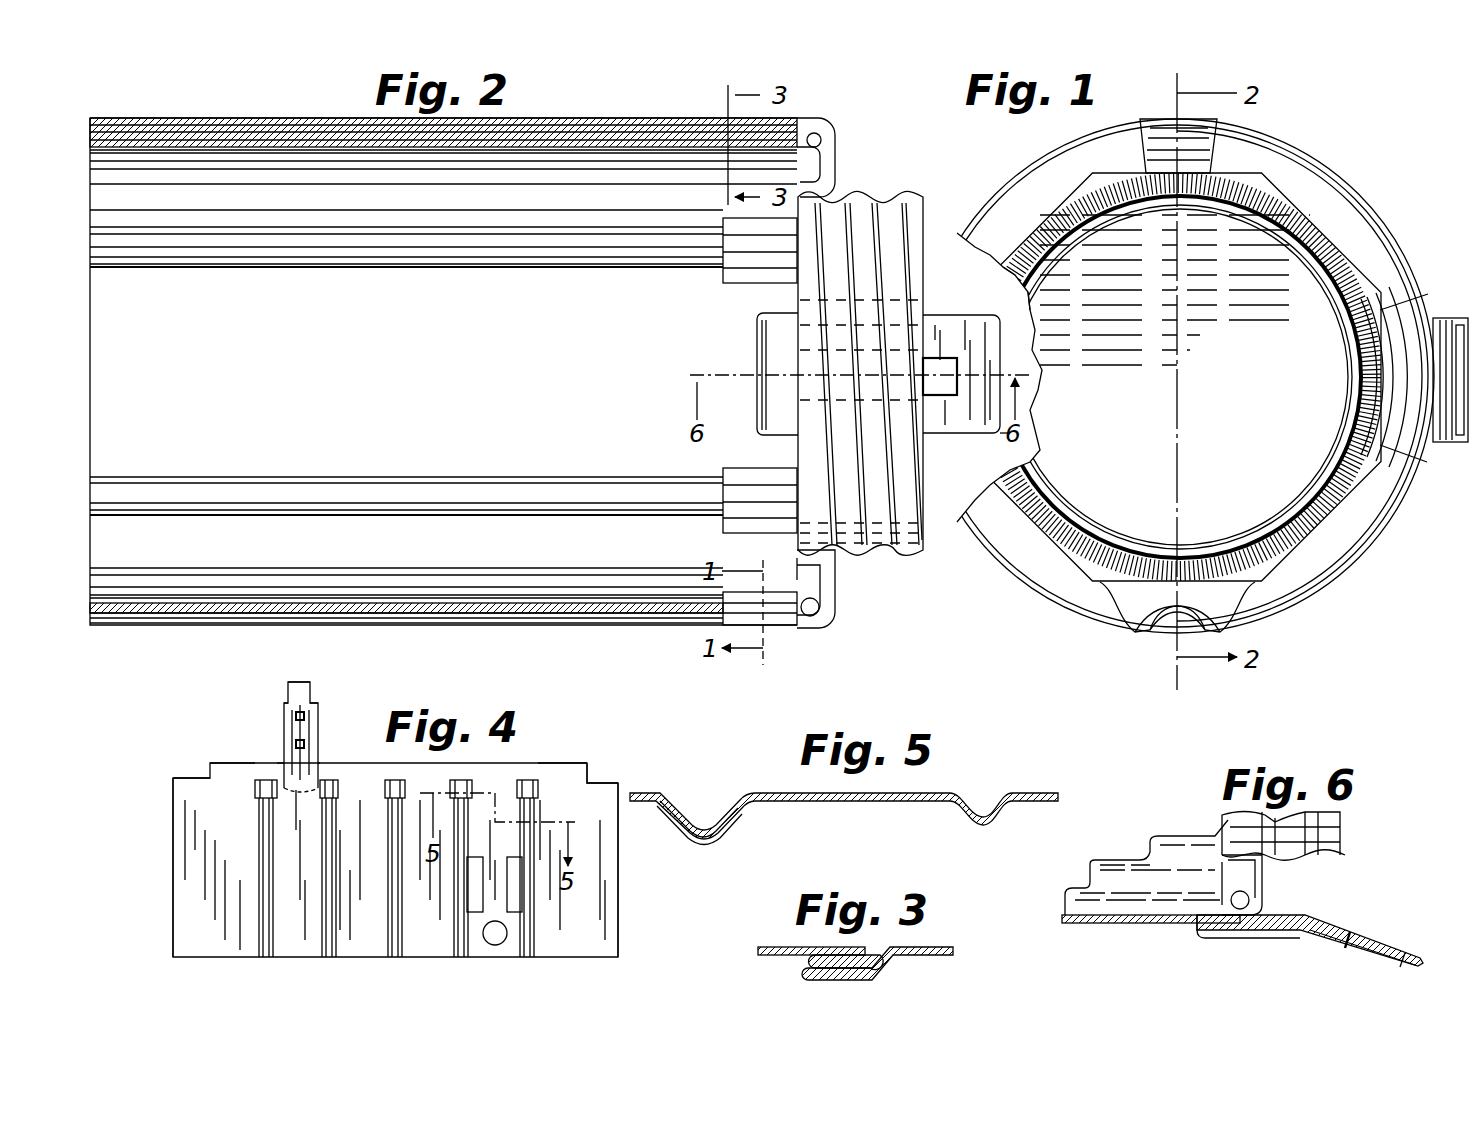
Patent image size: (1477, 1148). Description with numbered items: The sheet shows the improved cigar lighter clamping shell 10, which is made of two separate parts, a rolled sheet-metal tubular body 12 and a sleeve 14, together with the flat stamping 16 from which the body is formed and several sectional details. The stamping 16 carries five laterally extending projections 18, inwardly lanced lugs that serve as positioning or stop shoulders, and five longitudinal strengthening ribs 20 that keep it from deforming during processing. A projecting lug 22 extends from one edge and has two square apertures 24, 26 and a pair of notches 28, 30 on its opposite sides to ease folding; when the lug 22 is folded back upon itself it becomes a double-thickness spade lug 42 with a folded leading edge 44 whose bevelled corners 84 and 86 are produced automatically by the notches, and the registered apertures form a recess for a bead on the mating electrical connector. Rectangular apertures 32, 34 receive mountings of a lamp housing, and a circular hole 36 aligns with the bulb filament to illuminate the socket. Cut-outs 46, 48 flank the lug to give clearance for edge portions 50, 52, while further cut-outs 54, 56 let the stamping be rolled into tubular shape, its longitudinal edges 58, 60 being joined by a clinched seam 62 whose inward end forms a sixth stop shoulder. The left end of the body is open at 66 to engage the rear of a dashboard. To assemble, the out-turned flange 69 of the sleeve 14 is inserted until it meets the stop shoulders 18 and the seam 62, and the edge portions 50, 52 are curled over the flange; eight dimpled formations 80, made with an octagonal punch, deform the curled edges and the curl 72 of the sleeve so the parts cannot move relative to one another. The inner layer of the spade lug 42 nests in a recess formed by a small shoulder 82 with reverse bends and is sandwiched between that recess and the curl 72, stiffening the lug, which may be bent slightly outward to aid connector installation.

In FIG. 2, the cigar lighter clamping shell 10 is at (575, 645).
In FIG. 1, the cigar lighter clamping shell 10 is at (1177, 376).
In FIG. 2, the tubular body 12 is at (443, 371).
In FIG. 6, the tubular body 12 is at (1190, 840).
In FIG. 2, the sleeve 14 is at (918, 292).
In FIG. 1, the sleeve 14 is at (1360, 282).
In FIG. 6, the sleeve 14 is at (1342, 832).
In FIG. 4, the stamping 16 is at (170, 770).
In FIG. 2, the laterally extending projections 18 is at (738, 272).
In FIG. 1, the laterally extending projections 18 is at (1125, 622).
In FIG. 4, the laterally extending projections 18 is at (262, 778).
In FIG. 5, the laterally extending projections 18 is at (710, 845).
In FIG. 2, the longitudinal strengthening ribs 20 is at (622, 240).
In FIG. 1, the longitudinal strengthening ribs 20 is at (1165, 635).
In FIG. 4, the longitudinal strengthening ribs 20 is at (262, 945).
In FIG. 5, the longitudinal strengthening ribs 20 is at (696, 800).
In FIG. 4, the projecting lug 22 is at (287, 686).
In FIG. 2, the aperture 24 is at (942, 357).
In FIG. 1, the aperture 24 is at (974, 299).
In FIG. 4, the aperture 24 is at (305, 712).
In FIG. 6, the aperture 24 is at (1368, 938).
In FIG. 4, the aperture 26 is at (306, 744).
In FIG. 6, the aperture 26 is at (1360, 950).
In FIG. 4, the notch 28 is at (285, 733).
In FIG. 4, the notch 30 is at (315, 735).
In FIG. 4, the aperture 32 is at (470, 875).
In FIG. 4, the aperture 34 is at (518, 900).
In FIG. 4, the circular hole 36 is at (495, 946).
In FIG. 2, the spade lug 42 is at (975, 432).
In FIG. 1, the spade lug 42 is at (957, 456).
In FIG. 6, the spade lug 42 is at (1325, 917).
In FIG. 2, the folded leading edge 44 is at (1016, 302).
In FIG. 1, the folded leading edge 44 is at (1016, 302).
In FIG. 6, the folded leading edge 44 is at (1420, 960).
In FIG. 4, the cut-out 46 is at (277, 778).
In FIG. 4, the cut-out 48 is at (342, 758).
In FIG. 2, the edge portion 50 is at (838, 137).
In FIG. 4, the edge portion 50 is at (222, 770).
In FIG. 6, the edge portion 50 is at (1263, 892).
In FIG. 2, the edge portion 52 is at (836, 575).
In FIG. 4, the edge portion 52 is at (542, 764).
In FIG. 4, the cut-out 54 is at (198, 777).
In FIG. 4, the cut-out 56 is at (606, 782).
In FIG. 2, the longitudinal edge 58 is at (645, 122).
In FIG. 4, the longitudinal edge 58 is at (173, 900).
In FIG. 3, the longitudinal edge 58 is at (866, 950).
In FIG. 2, the longitudinal edge 60 is at (533, 122).
In FIG. 4, the longitudinal edge 60 is at (618, 882).
In FIG. 3, the longitudinal edge 60 is at (800, 973).
In FIG. 2, the clinched seam 62 is at (597, 118).
In FIG. 3, the clinched seam 62 is at (895, 968).
In FIG. 2, the open end 66 is at (85, 585).
In FIG. 2, the out-turned flange 69 is at (797, 572).
In FIG. 1, the out-turned flange 69 is at (1052, 215).
In FIG. 6, the out-turned flange 69 is at (1222, 862).
In FIG. 2, the curl 72 is at (828, 620).
In FIG. 6, the curl 72 is at (1262, 905).
In FIG. 1, the dimpled formations 80 is at (1060, 167).
In FIG. 2, the shoulder 82 is at (756, 340).
In FIG. 4, the shoulder 82 is at (300, 790).
In FIG. 6, the shoulder 82 is at (1200, 932).
In FIG. 2, the bevelled corner 84 is at (1003, 278).
In FIG. 1, the bevelled corner 84 is at (1003, 278).
In FIG. 2, the bevelled corner 86 is at (1000, 430).
In FIG. 1, the bevelled corner 86 is at (992, 456).